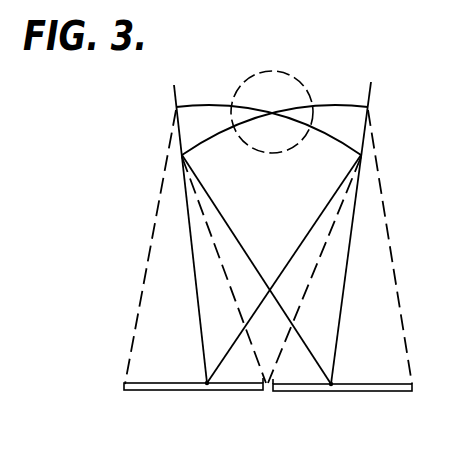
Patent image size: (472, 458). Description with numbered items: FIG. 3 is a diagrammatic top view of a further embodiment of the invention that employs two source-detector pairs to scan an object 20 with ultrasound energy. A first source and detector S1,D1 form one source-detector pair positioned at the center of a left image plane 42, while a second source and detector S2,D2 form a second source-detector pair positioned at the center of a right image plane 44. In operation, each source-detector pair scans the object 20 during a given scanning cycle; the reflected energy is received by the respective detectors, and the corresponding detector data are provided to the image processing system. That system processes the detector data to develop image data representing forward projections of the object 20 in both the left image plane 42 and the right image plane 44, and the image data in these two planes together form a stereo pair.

The object 20 is at (311, 98).
The left image plane 42 is at (158, 391).
The right image plane 44 is at (395, 392).
The source and detector of first source-detector pair S1,D1 is at (208, 391).
The source and detector of second source-detector pair S2,D2 is at (329, 392).